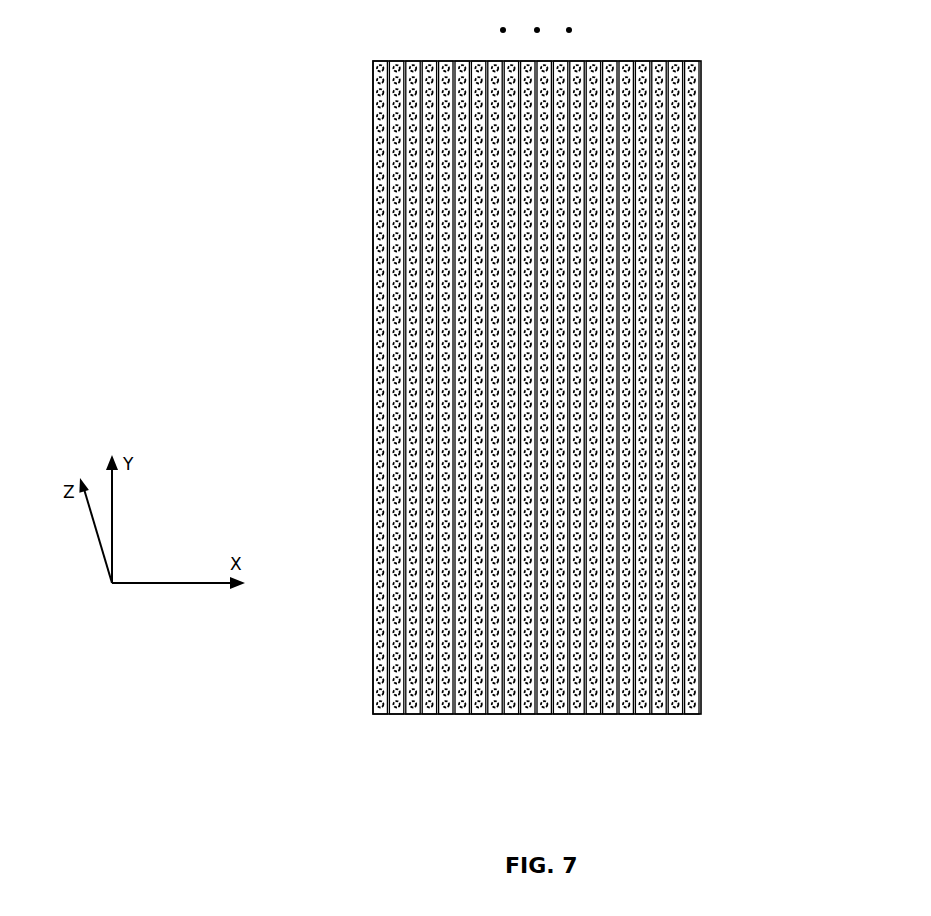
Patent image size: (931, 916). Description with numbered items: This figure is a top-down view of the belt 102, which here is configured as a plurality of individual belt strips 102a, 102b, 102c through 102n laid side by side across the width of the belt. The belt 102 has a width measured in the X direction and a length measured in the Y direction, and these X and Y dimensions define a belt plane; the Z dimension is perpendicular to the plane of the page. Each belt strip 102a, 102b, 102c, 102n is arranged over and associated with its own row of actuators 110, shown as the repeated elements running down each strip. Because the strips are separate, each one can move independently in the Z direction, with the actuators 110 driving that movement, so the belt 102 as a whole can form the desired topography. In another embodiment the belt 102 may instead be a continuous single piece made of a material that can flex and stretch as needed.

The belt 102 is at (540, 366).
The belt strip 102a is at (379, 61).
The belt strip 102b is at (396, 61).
The belt strip 102c is at (427, 29).
The belt strip 102n is at (694, 61).
The actuators 110 is at (573, 387).